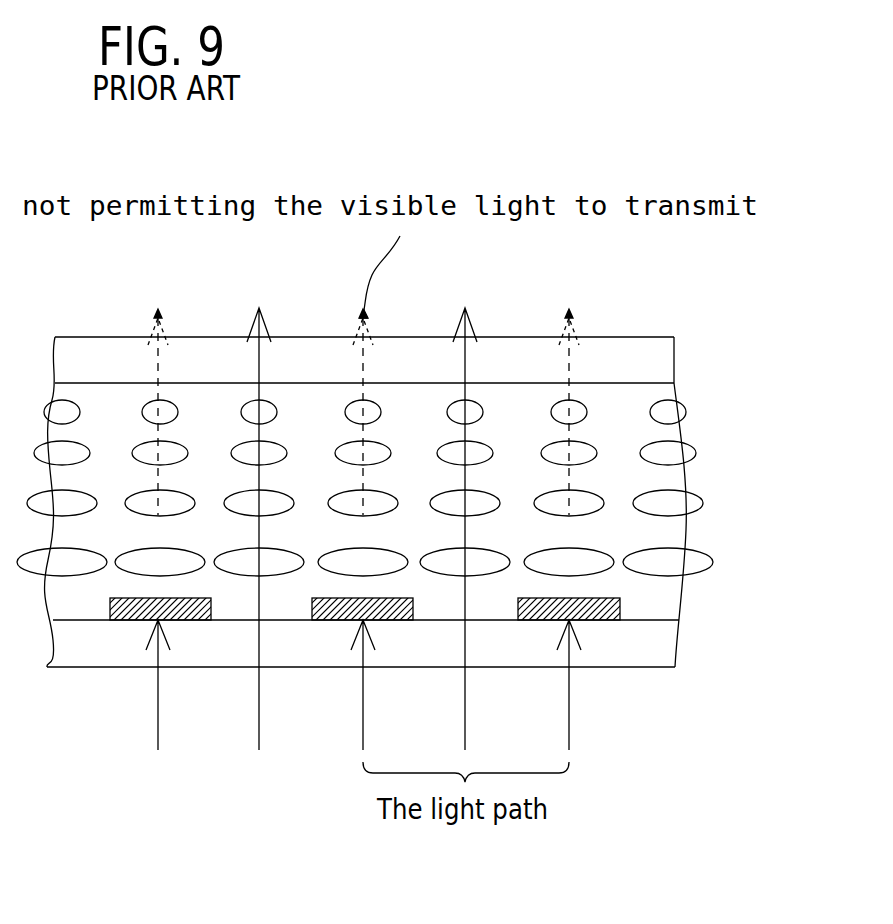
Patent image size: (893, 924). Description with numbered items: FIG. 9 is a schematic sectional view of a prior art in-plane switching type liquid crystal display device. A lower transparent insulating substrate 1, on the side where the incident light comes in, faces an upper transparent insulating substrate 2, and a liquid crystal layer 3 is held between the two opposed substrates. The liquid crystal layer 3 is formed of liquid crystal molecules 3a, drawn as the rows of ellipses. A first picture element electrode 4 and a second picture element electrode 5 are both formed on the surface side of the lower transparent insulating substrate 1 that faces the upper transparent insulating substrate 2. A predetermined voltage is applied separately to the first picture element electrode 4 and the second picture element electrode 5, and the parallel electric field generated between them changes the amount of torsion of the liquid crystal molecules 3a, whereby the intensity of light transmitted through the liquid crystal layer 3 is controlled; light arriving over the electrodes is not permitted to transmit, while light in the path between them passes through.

The lower transparent insulating substrate 1 is at (638, 657).
The upper transparent insulating substrate 2 is at (625, 352).
The liquid crystal layer 3 is at (408, 525).
The liquid crystal molecule 3a is at (687, 488).
The first picture element electrode 4 is at (122, 620).
The second picture element electrode 5 is at (328, 620).